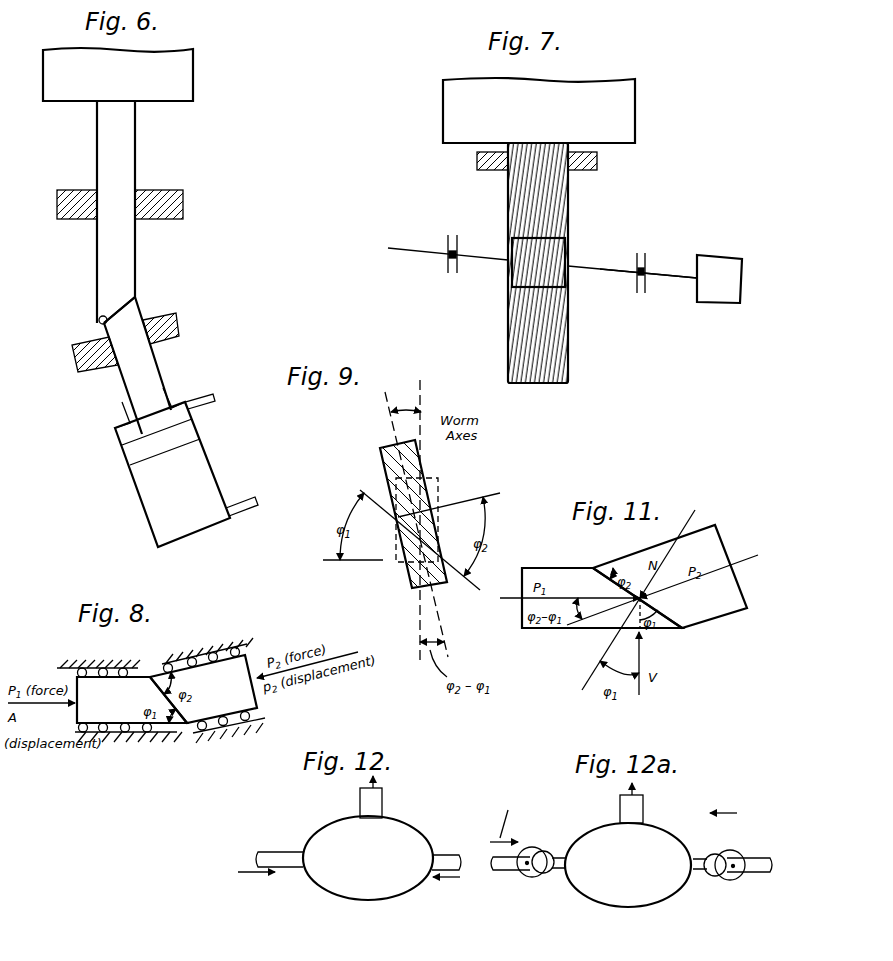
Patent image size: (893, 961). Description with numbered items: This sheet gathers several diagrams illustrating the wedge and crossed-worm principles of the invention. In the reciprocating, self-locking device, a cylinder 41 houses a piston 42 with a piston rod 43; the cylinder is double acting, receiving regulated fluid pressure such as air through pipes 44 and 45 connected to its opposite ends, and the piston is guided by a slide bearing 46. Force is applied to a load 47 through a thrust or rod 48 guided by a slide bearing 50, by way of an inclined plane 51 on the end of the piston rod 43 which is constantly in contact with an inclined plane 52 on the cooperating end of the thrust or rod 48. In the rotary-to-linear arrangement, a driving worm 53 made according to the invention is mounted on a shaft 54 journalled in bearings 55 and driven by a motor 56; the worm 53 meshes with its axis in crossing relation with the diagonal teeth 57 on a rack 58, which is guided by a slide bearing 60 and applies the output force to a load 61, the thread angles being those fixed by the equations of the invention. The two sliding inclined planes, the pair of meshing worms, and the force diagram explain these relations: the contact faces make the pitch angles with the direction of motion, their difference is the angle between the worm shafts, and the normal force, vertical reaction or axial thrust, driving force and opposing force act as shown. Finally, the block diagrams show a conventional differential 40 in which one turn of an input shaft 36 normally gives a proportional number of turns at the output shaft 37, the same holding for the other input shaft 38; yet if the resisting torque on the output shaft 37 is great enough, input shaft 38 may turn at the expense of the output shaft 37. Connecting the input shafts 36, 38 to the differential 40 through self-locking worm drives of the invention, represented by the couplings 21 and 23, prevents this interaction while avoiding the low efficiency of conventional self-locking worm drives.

In FIG. 6, the cylinder 41 is at (148, 508).
In FIG. 6, the piston 42 is at (134, 458).
In FIG. 6, the piston rod 43 is at (158, 372).
In FIG. 6, the pipe 44 is at (256, 500).
In FIG. 6, the pipe 45 is at (214, 399).
In FIG. 6, the slide bearing 46 is at (162, 320).
In FIG. 6, the load 47 is at (192, 87).
In FIG. 6, the thrust or rod 48 is at (135, 160).
In FIG. 6, the slide bearing 50 is at (84, 218).
In FIG. 6, the inclined plane 51 is at (99, 325).
In FIG. 6, the inclined plane 52 is at (100, 316).
In FIG. 7, the driving worm 53 is at (568, 274).
In FIG. 7, the shaft 54 is at (662, 276).
In FIG. 7, the bearings 55 is at (451, 275).
In FIG. 7, the motor 56 is at (724, 296).
In FIG. 7, the diagonal teeth 57 is at (516, 352).
In FIG. 7, the rack 58 is at (510, 322).
In FIG. 7, the slide bearing 60 is at (600, 163).
In FIG. 7, the load 61 is at (625, 119).
In FIG. 12, the input shaft 36 is at (448, 857).
In FIG. 12A, the input shaft 36 is at (780, 822).
In FIG. 12, the output shaft 37 is at (383, 800).
In FIG. 12A, the output shaft 37 is at (643, 803).
In FIG. 12, the input shaft 38 is at (280, 852).
In FIG. 12A, the input shaft 38 is at (510, 870).
In FIG. 12, the differential 40 is at (400, 834).
In FIG. 12A, the differential 40 is at (638, 904).
In FIG. 12A, the coupling 21 is at (532, 848).
In FIG. 12A, the coupling gear 23 is at (546, 873).